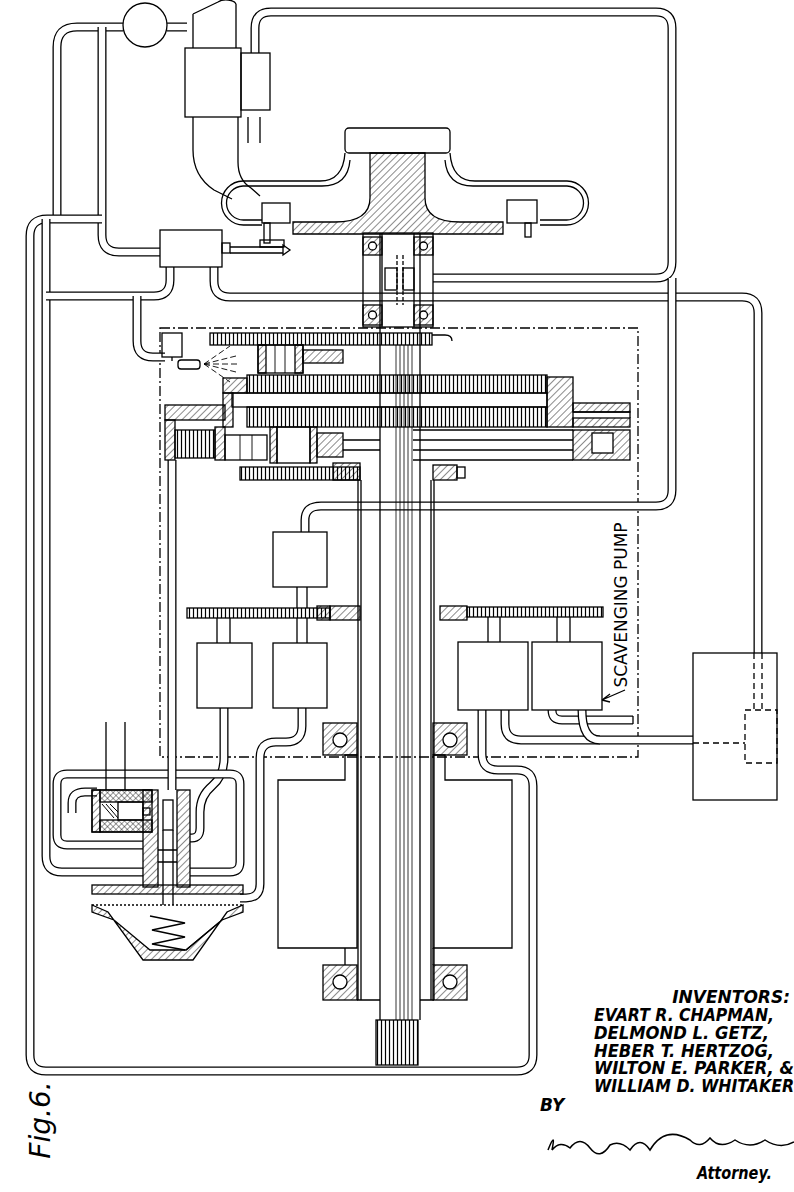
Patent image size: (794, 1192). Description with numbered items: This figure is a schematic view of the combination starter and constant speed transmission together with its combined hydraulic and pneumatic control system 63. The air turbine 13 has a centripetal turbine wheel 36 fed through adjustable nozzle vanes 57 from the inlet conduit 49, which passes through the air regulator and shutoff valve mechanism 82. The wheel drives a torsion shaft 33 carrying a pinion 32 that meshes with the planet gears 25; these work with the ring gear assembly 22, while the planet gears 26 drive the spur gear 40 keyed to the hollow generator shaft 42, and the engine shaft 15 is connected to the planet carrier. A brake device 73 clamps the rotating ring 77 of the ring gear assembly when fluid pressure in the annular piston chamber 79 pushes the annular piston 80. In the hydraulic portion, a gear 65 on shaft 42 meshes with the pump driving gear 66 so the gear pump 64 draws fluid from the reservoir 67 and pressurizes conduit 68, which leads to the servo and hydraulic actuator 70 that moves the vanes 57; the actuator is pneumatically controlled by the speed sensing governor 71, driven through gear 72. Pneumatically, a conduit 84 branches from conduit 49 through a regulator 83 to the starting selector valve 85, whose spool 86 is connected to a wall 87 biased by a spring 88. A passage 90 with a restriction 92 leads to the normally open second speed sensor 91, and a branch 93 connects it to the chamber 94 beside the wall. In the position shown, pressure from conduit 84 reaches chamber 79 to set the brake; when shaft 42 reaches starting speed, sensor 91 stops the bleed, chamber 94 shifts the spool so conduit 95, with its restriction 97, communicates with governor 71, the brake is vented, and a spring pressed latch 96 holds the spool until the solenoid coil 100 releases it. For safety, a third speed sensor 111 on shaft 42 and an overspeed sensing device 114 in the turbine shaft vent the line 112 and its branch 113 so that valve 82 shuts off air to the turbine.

The turbine 13 is at (515, 181).
The shaft 15 is at (395, 649).
The ring gear assembly 22 is at (549, 377).
The planet gears 25 is at (298, 333).
The planet gears 26 is at (248, 486).
The pinion 32 is at (446, 349).
The torsion shaft 33 is at (398, 280).
The turbine wheel 36 is at (398, 181).
The spur gear 40 is at (460, 475).
The hollow shaft 42 is at (353, 668).
The inlet conduit 49 is at (226, 28).
The vanes 57 is at (281, 204).
The control system 63 is at (46, 124).
The gear pump 64 is at (574, 678).
The gear 65 is at (350, 620).
The pump driving gear 66 is at (505, 607).
The reservoir 67 is at (696, 676).
The conduit 68 is at (172, 1068).
The servo and hydraulic actuator 70 is at (177, 240).
The speed sensing governor 71 is at (299, 663).
The gear 72 is at (272, 608).
The brake device 73 is at (162, 395).
The rotating ring 77 is at (181, 405).
The annular piston chamber 79 is at (193, 457).
The annular piston 80 is at (168, 443).
The air regulator and shutoff valve mechanism 82 is at (227, 95).
The regulator 83 is at (145, 47).
The conduit 84 is at (55, 548).
The starting selector valve 85 is at (128, 957).
The spool 86 is at (168, 815).
The wall 87 is at (222, 920).
The spring 88 is at (176, 950).
The passage 90 is at (75, 770).
The second speed sensor 91 is at (224, 663).
The restriction 92 is at (205, 772).
The branch 93 is at (257, 896).
The chamber 94 is at (100, 905).
The conduit 95 is at (72, 219).
The spring pressed latch 96 is at (130, 788).
The restriction 97 is at (103, 206).
The solenoid coil 100 is at (76, 798).
The third speed sensor 111 is at (299, 570).
The line 112 is at (668, 350).
The branch 113 is at (575, 276).
The overspeed sensing device 114 is at (366, 274).